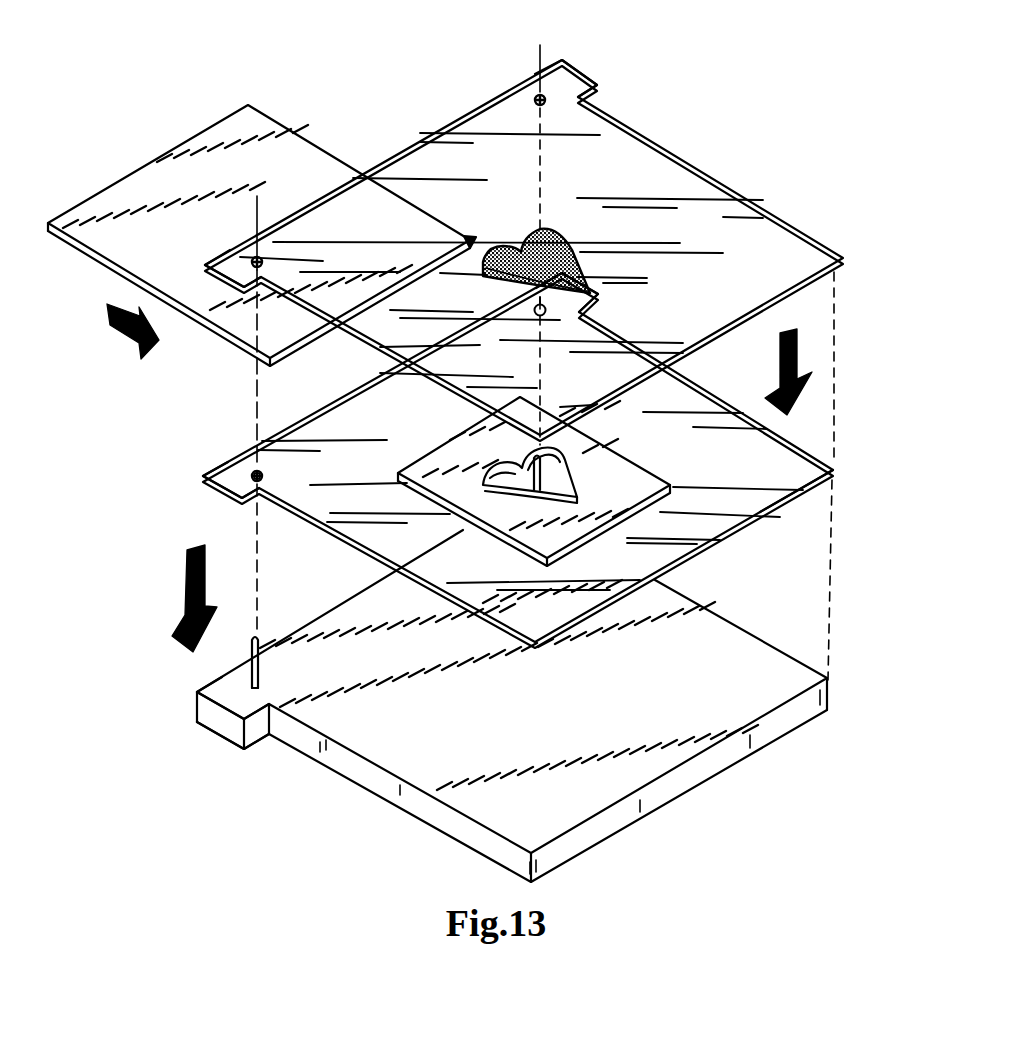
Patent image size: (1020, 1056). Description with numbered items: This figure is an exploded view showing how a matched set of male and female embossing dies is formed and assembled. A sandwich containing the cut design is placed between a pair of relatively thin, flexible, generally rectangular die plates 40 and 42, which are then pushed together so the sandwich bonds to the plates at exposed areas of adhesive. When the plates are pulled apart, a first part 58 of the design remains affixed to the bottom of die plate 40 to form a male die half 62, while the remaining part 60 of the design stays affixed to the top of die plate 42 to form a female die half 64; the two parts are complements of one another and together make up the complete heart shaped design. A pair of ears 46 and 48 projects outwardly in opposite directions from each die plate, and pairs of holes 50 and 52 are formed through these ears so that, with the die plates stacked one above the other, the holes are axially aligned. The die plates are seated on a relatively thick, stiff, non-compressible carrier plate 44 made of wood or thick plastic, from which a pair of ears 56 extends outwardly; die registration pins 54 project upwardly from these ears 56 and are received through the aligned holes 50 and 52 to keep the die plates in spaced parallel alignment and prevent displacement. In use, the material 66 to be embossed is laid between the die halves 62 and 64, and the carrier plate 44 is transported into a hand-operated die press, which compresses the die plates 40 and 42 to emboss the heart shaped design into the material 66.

The die plate 40 is at (655, 177).
The die plate 42 is at (823, 462).
The carrier plate 44 is at (735, 640).
The ear 46 is at (583, 68).
The ear 48 is at (600, 296).
The hole 50 is at (537, 92).
The hole 52 is at (583, 313).
The die registration pin 54 is at (565, 438).
The ear 56 is at (215, 722).
The first part of the design 58 is at (557, 230).
The remaining part of the design 60 is at (640, 470).
The male die half 62 is at (775, 195).
The female die half 64 is at (815, 510).
The material 66 is at (200, 132).